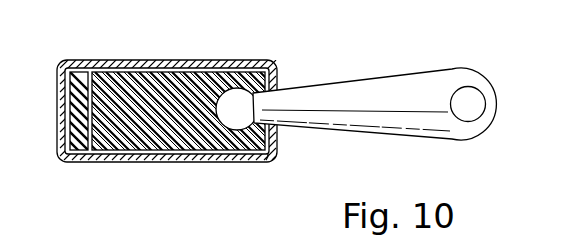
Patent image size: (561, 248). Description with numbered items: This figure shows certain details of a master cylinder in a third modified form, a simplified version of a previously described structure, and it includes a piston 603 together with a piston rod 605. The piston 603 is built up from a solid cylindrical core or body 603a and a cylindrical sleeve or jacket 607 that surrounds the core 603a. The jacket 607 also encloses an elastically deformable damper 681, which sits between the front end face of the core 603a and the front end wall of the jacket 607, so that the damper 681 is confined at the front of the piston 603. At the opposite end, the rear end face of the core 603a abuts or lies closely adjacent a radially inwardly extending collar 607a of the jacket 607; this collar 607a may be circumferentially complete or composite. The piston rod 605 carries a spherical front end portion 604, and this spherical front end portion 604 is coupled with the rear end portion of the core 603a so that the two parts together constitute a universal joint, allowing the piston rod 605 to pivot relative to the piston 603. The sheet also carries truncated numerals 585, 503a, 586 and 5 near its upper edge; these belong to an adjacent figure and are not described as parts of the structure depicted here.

The piston 603 is at (300, 144).
The core 603a is at (166, 120).
The spherical front end portion 604 is at (236, 102).
The piston rod 605 is at (436, 118).
The jacket 607 is at (149, 60).
The collar 607a is at (278, 152).
The damper 681 is at (78, 142).
The element of adjacent figure 585 is at (388, 0).
The element of adjacent figure 503a is at (442, 0).
The element of adjacent figure 586 is at (510, 0).
The element of adjacent figure 5 is at (554, 30).